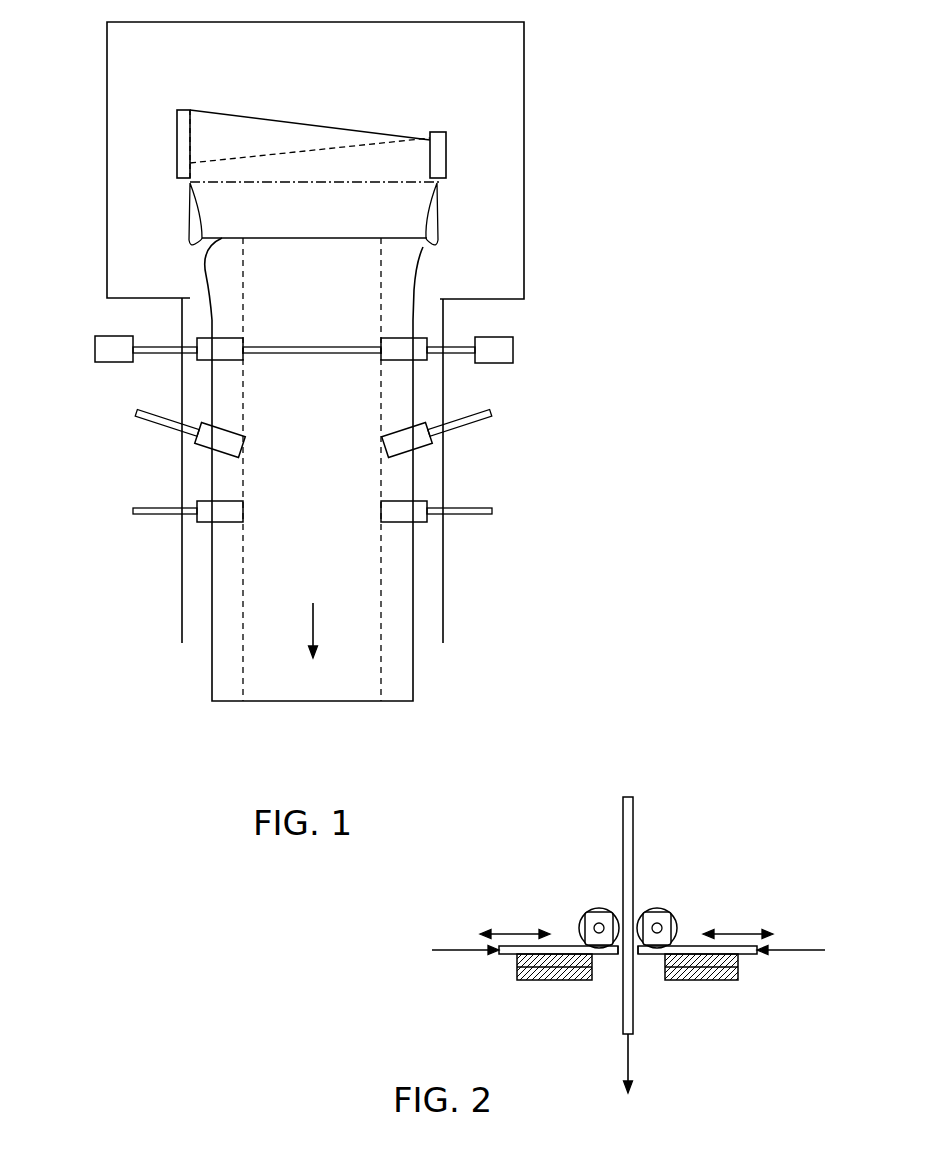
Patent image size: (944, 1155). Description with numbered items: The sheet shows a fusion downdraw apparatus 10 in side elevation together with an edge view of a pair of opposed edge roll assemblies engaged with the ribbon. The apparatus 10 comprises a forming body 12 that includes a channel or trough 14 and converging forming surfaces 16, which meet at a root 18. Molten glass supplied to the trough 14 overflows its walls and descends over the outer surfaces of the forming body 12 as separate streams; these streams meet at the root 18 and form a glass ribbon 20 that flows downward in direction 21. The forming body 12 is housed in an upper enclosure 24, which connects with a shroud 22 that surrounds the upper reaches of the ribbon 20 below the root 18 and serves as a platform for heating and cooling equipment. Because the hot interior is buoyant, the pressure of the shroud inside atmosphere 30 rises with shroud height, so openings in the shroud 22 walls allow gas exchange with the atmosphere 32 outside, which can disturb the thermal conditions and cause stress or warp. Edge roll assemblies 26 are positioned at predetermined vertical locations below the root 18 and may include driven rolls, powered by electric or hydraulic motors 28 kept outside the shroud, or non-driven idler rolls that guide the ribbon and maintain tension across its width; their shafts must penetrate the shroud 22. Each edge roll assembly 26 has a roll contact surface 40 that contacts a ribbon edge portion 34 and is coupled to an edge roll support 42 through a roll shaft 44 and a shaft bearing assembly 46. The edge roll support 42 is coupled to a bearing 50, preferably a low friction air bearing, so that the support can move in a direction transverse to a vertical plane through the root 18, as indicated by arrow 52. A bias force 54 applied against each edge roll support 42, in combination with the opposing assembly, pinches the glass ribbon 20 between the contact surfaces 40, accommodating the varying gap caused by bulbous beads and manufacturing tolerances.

In FIG. 1, the fusion downdraw apparatus 10 is at (602, 262).
In FIG. 1, the forming body 12 is at (458, 157).
In FIG. 1, the trough 14 is at (317, 150).
In FIG. 1, the converging forming surfaces 16 is at (275, 220).
In FIG. 1, the root 18 is at (203, 240).
In FIG. 1, the glass ribbon 20 is at (336, 714).
In FIG. 2, the glass ribbon 20 is at (635, 810).
In FIG. 1, the direction 21 is at (313, 625).
In FIG. 2, the direction 21 is at (628, 1062).
In FIG. 1, the shroud 22 is at (445, 573).
In FIG. 1, the upper enclosure 24 is at (524, 70).
In FIG. 1, the edge roll assemblies 26 is at (482, 524).
In FIG. 2, the edge roll assemblies 26 is at (521, 860).
In FIG. 1, the motors 28 is at (107, 363).
In FIG. 1, the shroud inside atmosphere 30 is at (192, 580).
In FIG. 1, the atmosphere outside the shroud 32 is at (125, 477).
In FIG. 1, the edge portions 34 is at (225, 672).
In FIG. 2, the roll contact surface 40 is at (603, 910).
In FIG. 2, the edge roll support 42 is at (616, 955).
In FIG. 2, the roll shaft 44 is at (585, 940).
In FIG. 2, the shaft bearing assembly 46 is at (592, 926).
In FIG. 2, the bearing 50 is at (560, 980).
In FIG. 2, the arrow 52 is at (505, 933).
In FIG. 2, the bias force 54 is at (452, 950).